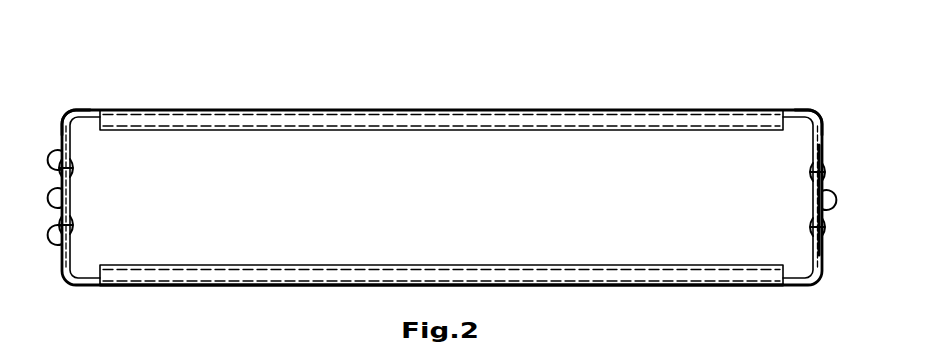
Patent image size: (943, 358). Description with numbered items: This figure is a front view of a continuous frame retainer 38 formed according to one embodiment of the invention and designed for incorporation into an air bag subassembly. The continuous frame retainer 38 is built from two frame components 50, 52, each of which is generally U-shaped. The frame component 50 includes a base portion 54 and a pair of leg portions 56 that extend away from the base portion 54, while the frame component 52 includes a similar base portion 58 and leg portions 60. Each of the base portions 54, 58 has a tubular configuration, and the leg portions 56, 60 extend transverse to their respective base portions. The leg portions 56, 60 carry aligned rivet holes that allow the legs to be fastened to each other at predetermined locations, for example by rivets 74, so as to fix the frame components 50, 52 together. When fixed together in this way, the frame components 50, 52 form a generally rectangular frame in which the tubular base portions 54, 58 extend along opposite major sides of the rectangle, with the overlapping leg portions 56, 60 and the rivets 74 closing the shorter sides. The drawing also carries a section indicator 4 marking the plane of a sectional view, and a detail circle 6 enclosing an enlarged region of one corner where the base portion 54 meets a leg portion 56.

The section line 4- 4 is at (46, 55).
The detail circle 6 is at (92, 91).
The continuous frame retainer 38 is at (700, 300).
The frame component 50 is at (500, 90).
The frame component 52 is at (603, 286).
The base portion 54 is at (404, 106).
The leg portions 56 is at (65, 132).
The base portion 58 is at (290, 286).
The leg portions 60 is at (70, 203).
The rivets 74 is at (66, 152).